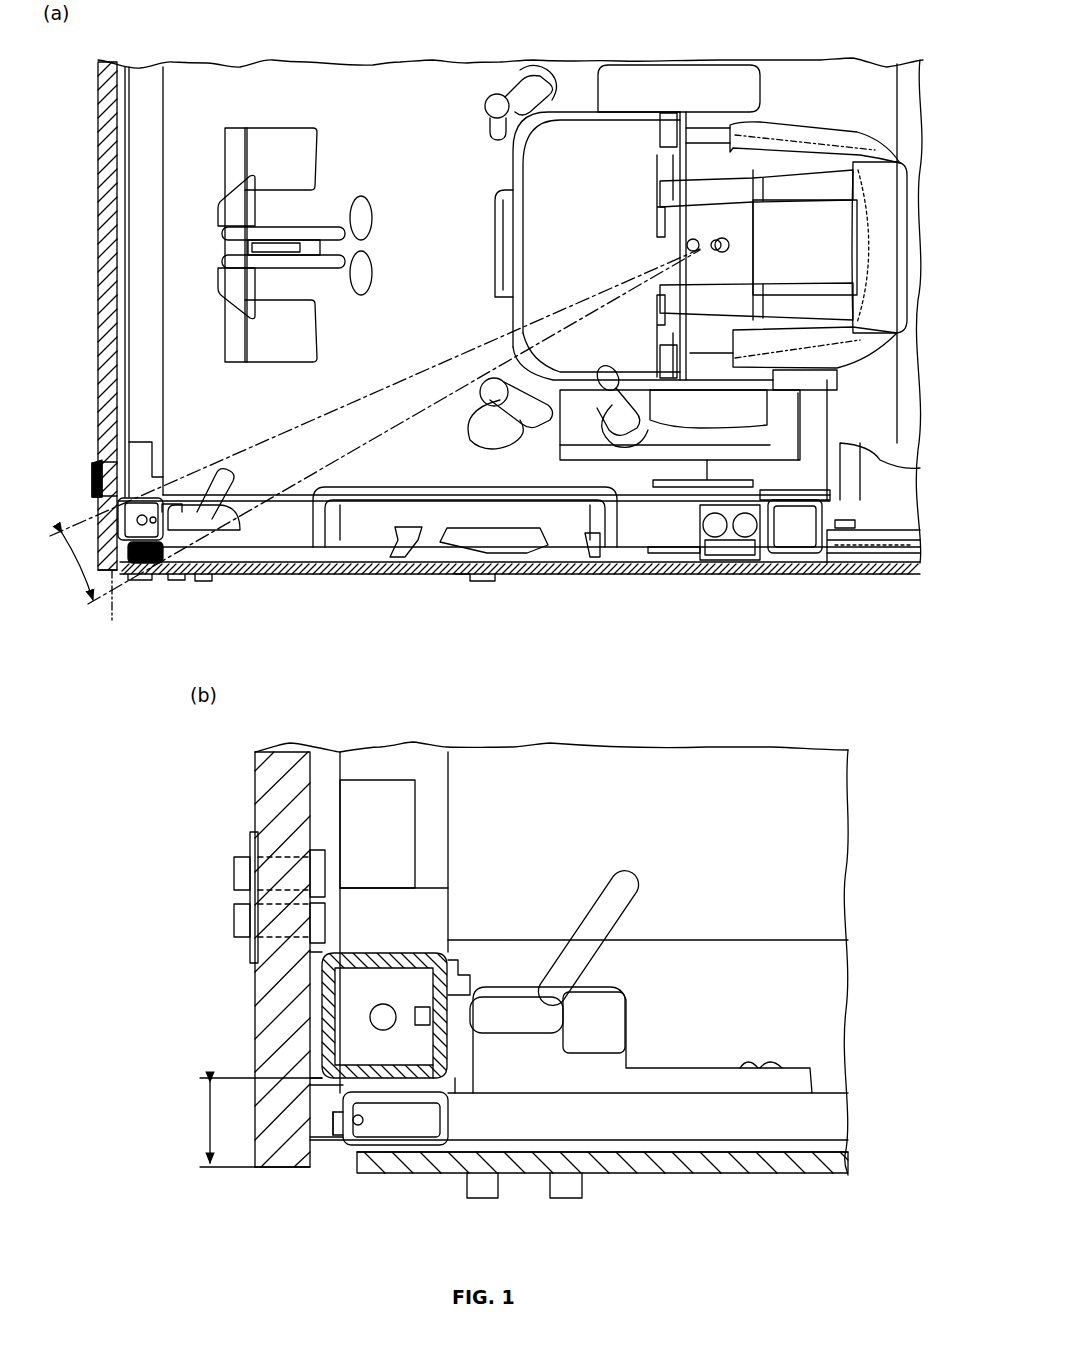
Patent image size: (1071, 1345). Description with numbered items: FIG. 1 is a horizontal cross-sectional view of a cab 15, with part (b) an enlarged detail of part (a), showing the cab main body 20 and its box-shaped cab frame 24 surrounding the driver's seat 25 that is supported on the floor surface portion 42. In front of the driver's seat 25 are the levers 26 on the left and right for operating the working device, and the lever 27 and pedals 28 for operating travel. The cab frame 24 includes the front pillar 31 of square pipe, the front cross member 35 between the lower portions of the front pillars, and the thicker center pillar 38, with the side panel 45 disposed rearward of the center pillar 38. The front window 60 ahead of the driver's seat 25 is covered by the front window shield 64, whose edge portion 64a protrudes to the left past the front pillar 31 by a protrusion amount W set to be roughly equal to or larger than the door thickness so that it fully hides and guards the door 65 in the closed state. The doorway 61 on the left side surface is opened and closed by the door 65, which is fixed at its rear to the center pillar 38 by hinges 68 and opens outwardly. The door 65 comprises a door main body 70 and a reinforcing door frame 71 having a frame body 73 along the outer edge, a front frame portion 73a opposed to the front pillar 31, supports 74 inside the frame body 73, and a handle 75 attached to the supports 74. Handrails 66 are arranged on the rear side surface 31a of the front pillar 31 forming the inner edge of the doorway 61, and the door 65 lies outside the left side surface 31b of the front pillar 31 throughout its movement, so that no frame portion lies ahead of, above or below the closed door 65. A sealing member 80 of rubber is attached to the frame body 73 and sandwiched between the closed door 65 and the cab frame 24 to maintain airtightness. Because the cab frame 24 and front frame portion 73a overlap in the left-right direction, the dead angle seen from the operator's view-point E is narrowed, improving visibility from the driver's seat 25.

The cab main body 20 is at (188, 53).
The floor surface portion 42 is at (430, 68).
The levers 26 is at (497, 94).
The driver's seat 25 is at (612, 132).
The view-point E is at (718, 240).
The pedals 28 is at (284, 142).
The lever 27 is at (376, 226).
The front window shield 64 is at (104, 224).
The front cross member 35 is at (126, 314).
The front window 60 is at (138, 512).
The sealing member 80 is at (95, 482).
The edge portion 64a is at (286, 1190).
The front pillar 31 is at (146, 545).
The rear side surface 31a is at (456, 962).
The left side surface 31b is at (434, 1080).
The frame body 73 is at (178, 564).
The front frame portion 73a is at (341, 1136).
The doorway 61 is at (190, 547).
The handrail 66 is at (216, 508).
The door frame 71 is at (290, 548).
The door 65 is at (320, 580).
The door main body 70 is at (362, 572).
The supports 74 is at (398, 557).
The handle 75 is at (575, 498).
The cab 15 is at (697, 597).
The hinges 68 is at (750, 567).
The center pillar 38 is at (815, 556).
The cab frame 24 is at (870, 566).
The side panel 45 is at (907, 562).
The protrusion amount W is at (252, 1122).